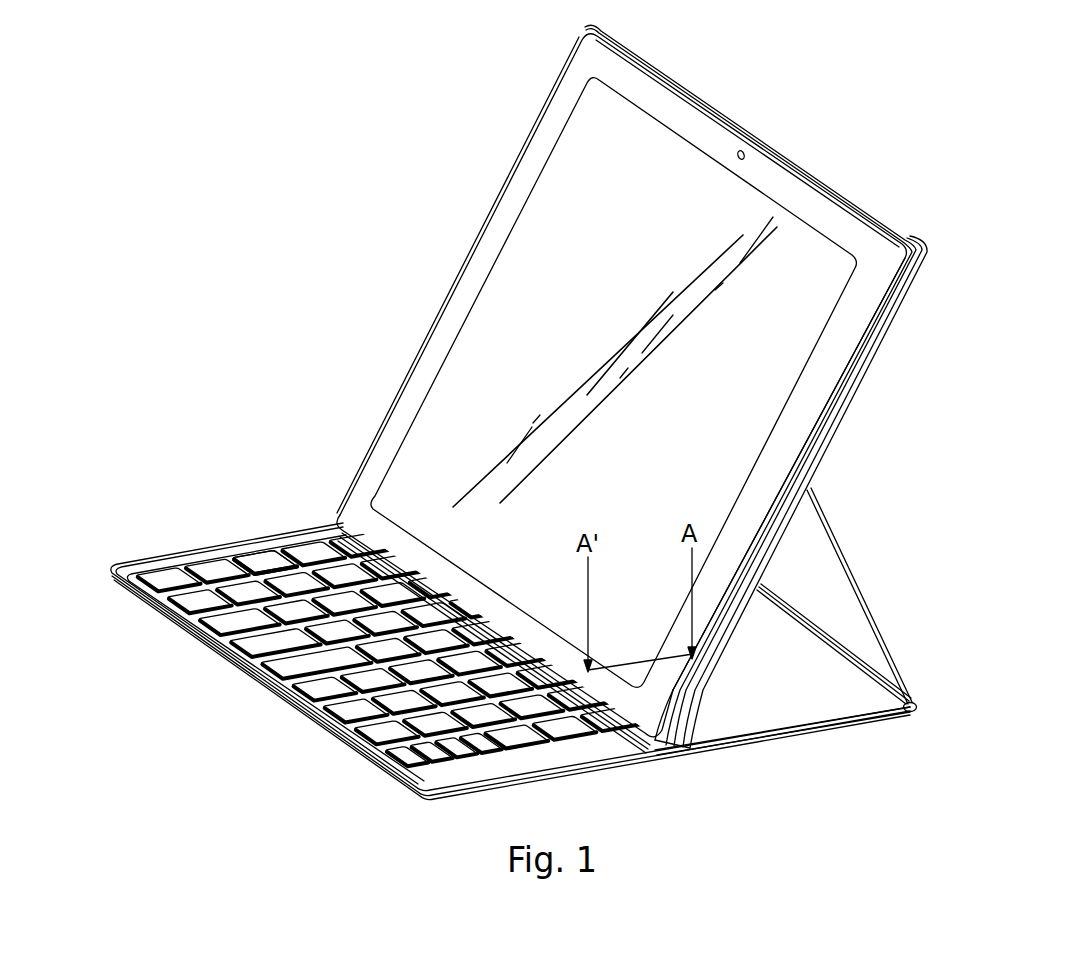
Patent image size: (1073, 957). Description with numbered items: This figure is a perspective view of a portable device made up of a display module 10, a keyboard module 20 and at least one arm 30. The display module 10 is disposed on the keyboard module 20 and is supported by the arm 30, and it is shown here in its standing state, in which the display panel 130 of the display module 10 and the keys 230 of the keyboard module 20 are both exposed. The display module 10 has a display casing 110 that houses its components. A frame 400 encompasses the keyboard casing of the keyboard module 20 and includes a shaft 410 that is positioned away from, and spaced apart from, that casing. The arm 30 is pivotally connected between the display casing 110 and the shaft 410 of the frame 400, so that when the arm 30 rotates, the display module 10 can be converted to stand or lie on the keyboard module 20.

The display module 10 is at (877, 223).
The display casing 110 is at (835, 355).
The display panel 130 is at (558, 172).
The keyboard module 20 is at (200, 648).
The keys 230 is at (252, 563).
The arm 30 is at (862, 602).
The frame 400 is at (853, 720).
The shaft 410 is at (917, 707).